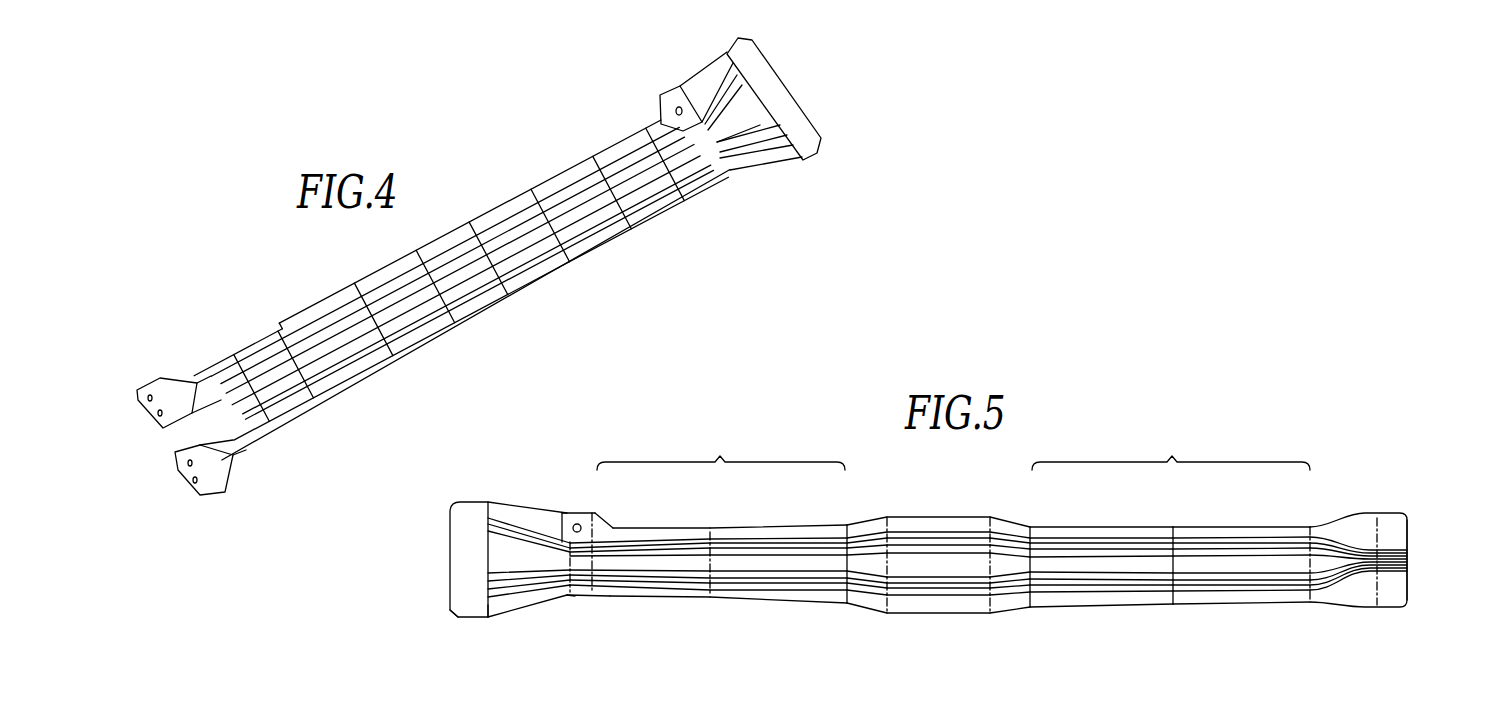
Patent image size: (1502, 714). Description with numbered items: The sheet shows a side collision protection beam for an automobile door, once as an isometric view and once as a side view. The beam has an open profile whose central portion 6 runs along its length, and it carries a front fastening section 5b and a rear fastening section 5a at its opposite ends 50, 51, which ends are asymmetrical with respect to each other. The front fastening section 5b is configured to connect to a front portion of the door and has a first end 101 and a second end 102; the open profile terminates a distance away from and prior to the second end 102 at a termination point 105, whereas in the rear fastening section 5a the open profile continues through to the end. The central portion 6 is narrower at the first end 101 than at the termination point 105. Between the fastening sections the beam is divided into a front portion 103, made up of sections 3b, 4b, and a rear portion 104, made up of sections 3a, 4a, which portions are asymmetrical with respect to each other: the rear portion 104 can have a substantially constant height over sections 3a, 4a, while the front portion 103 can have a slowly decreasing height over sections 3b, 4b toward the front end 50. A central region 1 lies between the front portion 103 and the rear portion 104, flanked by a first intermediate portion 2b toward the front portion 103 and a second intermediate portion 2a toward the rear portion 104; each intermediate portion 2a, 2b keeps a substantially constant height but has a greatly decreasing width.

In FIG. 5, the central region 1 is at (952, 517).
In FIG. 5, the second intermediate portion 2a is at (1018, 523).
In FIG. 5, the first intermediate portion 2b is at (867, 520).
In FIG. 5, the section of rear portion 3a is at (1092, 527).
In FIG. 5, the section of front portion 3b is at (792, 525).
In FIG. 5, the section of rear portion 4a is at (1235, 537).
In FIG. 5, the section of front portion 4b is at (652, 537).
In FIG. 5, the rear fastening section 5a is at (1360, 513).
In FIG. 5, the front fastening section 5b is at (530, 507).
In FIG. 4, the central portion 6 is at (748, 103).
In FIG. 5, the central portion 6 is at (502, 565).
In FIG. 4, the front end of the beam 50 is at (812, 122).
In FIG. 5, the front end of the beam 50 is at (450, 540).
In FIG. 4, the rear end of the beam 51 is at (177, 452).
In FIG. 5, the rear end of the beam 51 is at (1407, 565).
In FIG. 5, the first end 101 is at (567, 599).
In FIG. 5, the second end 102 is at (453, 617).
In FIG. 5, the front portion 103 is at (722, 452).
In FIG. 5, the rear portion 104 is at (1174, 452).
In FIG. 5, the termination point 105 is at (487, 619).